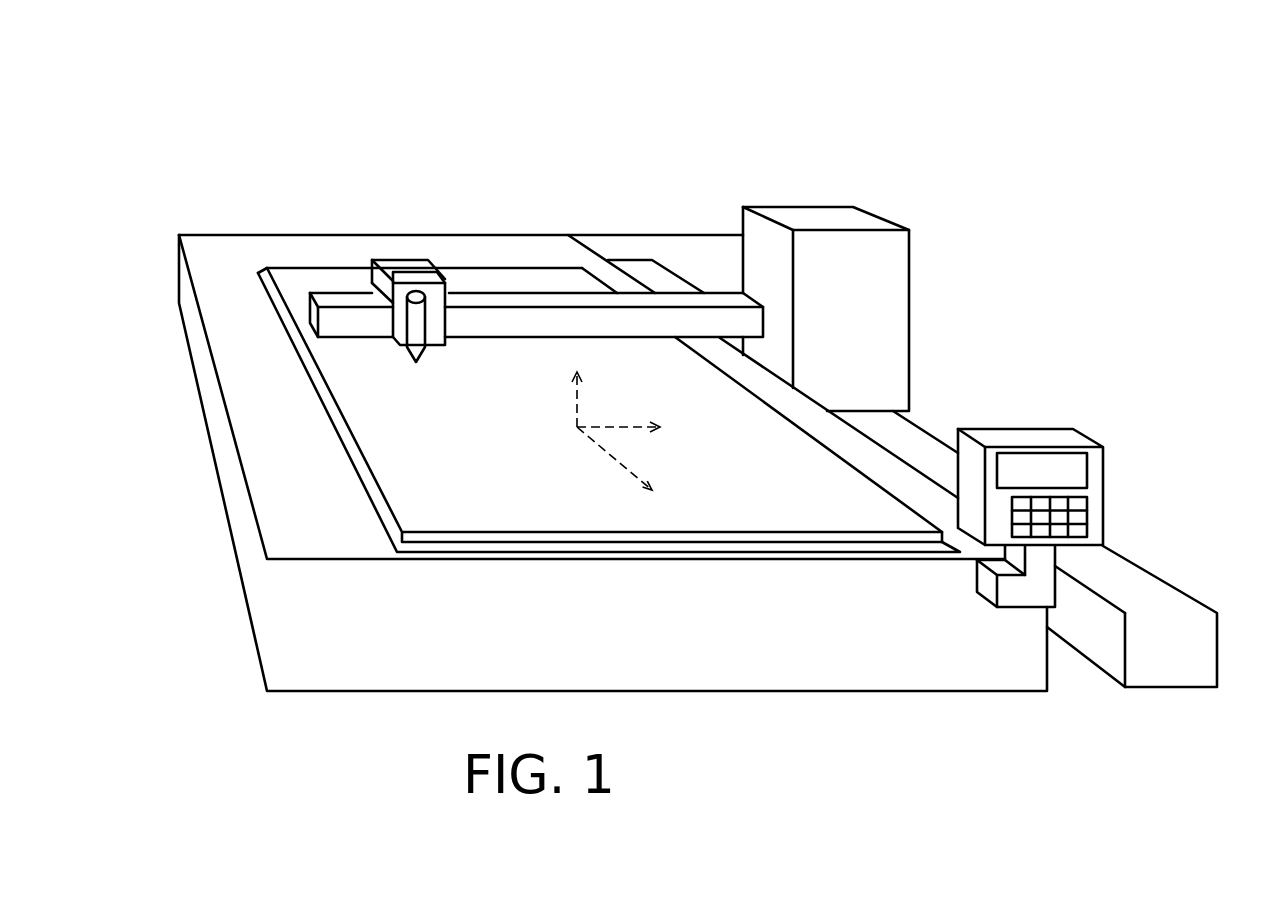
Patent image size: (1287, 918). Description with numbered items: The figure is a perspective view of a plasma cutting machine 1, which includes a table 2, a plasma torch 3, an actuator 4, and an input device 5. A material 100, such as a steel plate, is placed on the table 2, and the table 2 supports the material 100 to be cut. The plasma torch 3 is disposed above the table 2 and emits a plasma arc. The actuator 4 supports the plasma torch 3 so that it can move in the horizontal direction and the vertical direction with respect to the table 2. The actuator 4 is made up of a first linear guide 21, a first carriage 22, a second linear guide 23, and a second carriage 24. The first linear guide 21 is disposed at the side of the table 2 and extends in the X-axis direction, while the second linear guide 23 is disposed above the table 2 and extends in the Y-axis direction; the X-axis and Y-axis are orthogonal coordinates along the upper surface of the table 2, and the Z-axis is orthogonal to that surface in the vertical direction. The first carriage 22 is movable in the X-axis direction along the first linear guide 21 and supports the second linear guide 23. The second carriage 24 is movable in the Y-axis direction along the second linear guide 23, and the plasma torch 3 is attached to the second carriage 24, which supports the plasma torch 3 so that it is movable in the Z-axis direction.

The plasma cutting machine 1 is at (733, 104).
The table 2 is at (498, 235).
The plasma torch 3 is at (417, 327).
The actuator 4 is at (906, 197).
The input device 5 is at (1097, 487).
The first linear guide 21 is at (928, 432).
The first carriage 22 is at (823, 213).
The second linear guide 23 is at (472, 290).
The second carriage 24 is at (405, 260).
The material 100 is at (327, 268).